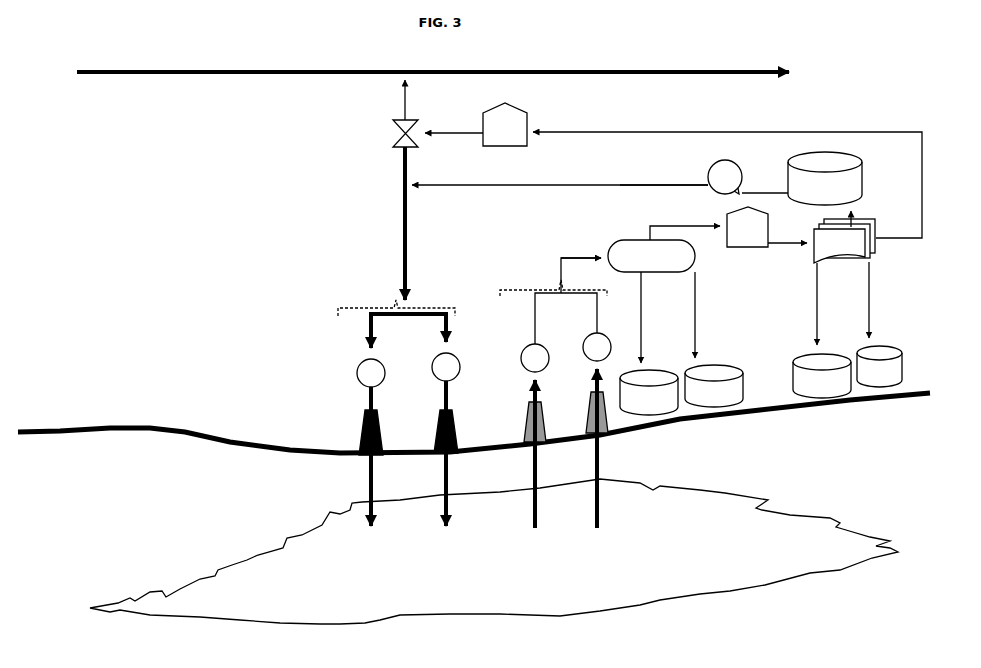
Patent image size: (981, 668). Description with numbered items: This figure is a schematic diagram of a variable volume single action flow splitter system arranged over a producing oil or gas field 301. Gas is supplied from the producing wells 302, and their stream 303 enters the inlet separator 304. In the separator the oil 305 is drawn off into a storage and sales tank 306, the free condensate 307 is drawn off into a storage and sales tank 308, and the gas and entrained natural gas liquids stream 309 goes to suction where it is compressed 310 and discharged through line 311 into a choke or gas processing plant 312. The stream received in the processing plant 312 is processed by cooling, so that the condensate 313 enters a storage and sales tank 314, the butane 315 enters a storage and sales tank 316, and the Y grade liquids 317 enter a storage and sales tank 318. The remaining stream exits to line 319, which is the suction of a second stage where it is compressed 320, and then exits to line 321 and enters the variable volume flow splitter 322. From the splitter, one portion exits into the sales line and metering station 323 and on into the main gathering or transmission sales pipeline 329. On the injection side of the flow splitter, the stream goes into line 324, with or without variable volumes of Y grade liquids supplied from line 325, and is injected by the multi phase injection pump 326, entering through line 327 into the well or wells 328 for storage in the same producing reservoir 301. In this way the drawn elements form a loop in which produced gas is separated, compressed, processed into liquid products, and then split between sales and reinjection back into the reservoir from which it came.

The producing oil or gas field 301 is at (794, 511).
The producing wells 302 is at (555, 393).
The stream 303 is at (585, 257).
The inlet separator 304 is at (651, 256).
The oil 305 is at (646, 301).
The storage and sales tank 306 is at (649, 392).
The free condensate 307 is at (701, 298).
The storage and sales tank 308 is at (714, 386).
The gas and entrained natural gas liquids stream 309 is at (680, 226).
The compressor 310 is at (747, 227).
The line 311 is at (783, 258).
The choke or gas processing plant 312 is at (844, 241).
The condensate 313 is at (821, 294).
The storage and sales tank 314 is at (822, 376).
The butane 315 is at (878, 294).
The storage and sales tank 316 is at (879, 366).
The Y grade liquids 317 is at (859, 213).
The storage and sales tank 318 is at (825, 178).
The line 319 is at (864, 124).
The compressor 320 is at (505, 124).
The line 321 is at (465, 128).
The variable volume flow splitter 322 is at (392, 136).
The sales line and metering station 323 is at (396, 100).
The line 324 is at (396, 170).
The line 325 is at (780, 190).
The multi phase injection pump 326 is at (725, 177).
The line 327 is at (636, 179).
The well or wells 328 is at (399, 400).
The main gathering or transmission sales pipeline 329 is at (165, 80).